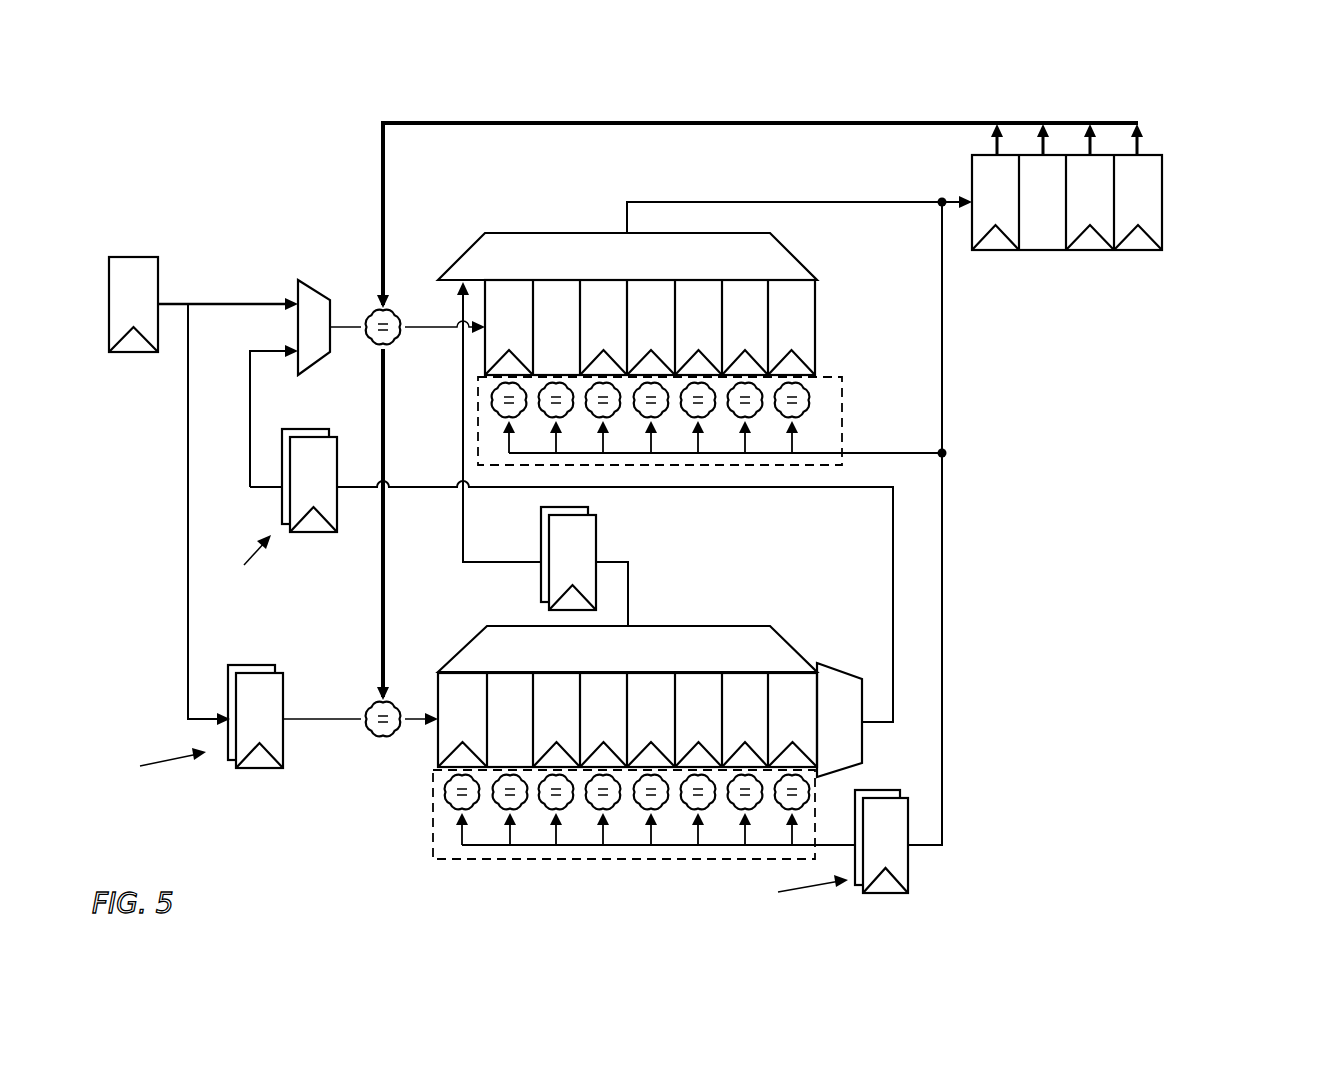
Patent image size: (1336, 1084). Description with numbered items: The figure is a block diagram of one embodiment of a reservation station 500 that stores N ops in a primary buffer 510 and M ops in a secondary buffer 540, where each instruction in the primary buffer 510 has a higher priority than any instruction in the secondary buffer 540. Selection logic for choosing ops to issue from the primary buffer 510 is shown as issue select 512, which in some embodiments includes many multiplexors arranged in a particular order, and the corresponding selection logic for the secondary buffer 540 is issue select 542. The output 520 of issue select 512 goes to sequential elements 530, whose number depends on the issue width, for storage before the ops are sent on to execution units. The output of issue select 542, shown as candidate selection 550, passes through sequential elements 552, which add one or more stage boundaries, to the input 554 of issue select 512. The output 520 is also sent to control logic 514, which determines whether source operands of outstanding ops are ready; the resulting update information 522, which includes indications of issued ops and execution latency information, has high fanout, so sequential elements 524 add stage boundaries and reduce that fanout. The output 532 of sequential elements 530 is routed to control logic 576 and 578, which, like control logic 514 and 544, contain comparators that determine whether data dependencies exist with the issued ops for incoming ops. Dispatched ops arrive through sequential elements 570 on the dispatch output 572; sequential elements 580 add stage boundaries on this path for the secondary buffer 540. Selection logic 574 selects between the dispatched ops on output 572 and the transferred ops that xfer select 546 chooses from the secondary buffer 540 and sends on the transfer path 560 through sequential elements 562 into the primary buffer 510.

The reservation station 500 is at (1238, 132).
The primary buffer 510 is at (818, 315).
The issue select 512 is at (627, 256).
The control logic 514 is at (843, 418).
The output of issue select 520 is at (832, 196).
The update information 522 is at (943, 418).
The sequential elements 524 is at (908, 880).
The sequential elements 530 is at (1075, 258).
The output of sequential elements 532 is at (380, 192).
The secondary buffer 540 is at (438, 683).
The issue select 542 is at (627, 649).
The control logic 544 is at (433, 803).
The xfer select 546 is at (841, 720).
The candidate selection 550 is at (630, 604).
The sequential elements 552 is at (541, 531).
The input of issue select 554 is at (461, 442).
The transfer 560 is at (892, 530).
The sequential elements 562 is at (314, 534).
The sequential elements 570 is at (150, 256).
The dispatch output 572 is at (213, 308).
The selection logic 574 is at (306, 287).
The control logic 576 is at (400, 352).
The control logic 578 is at (375, 740).
The sequential elements 580 is at (262, 768).